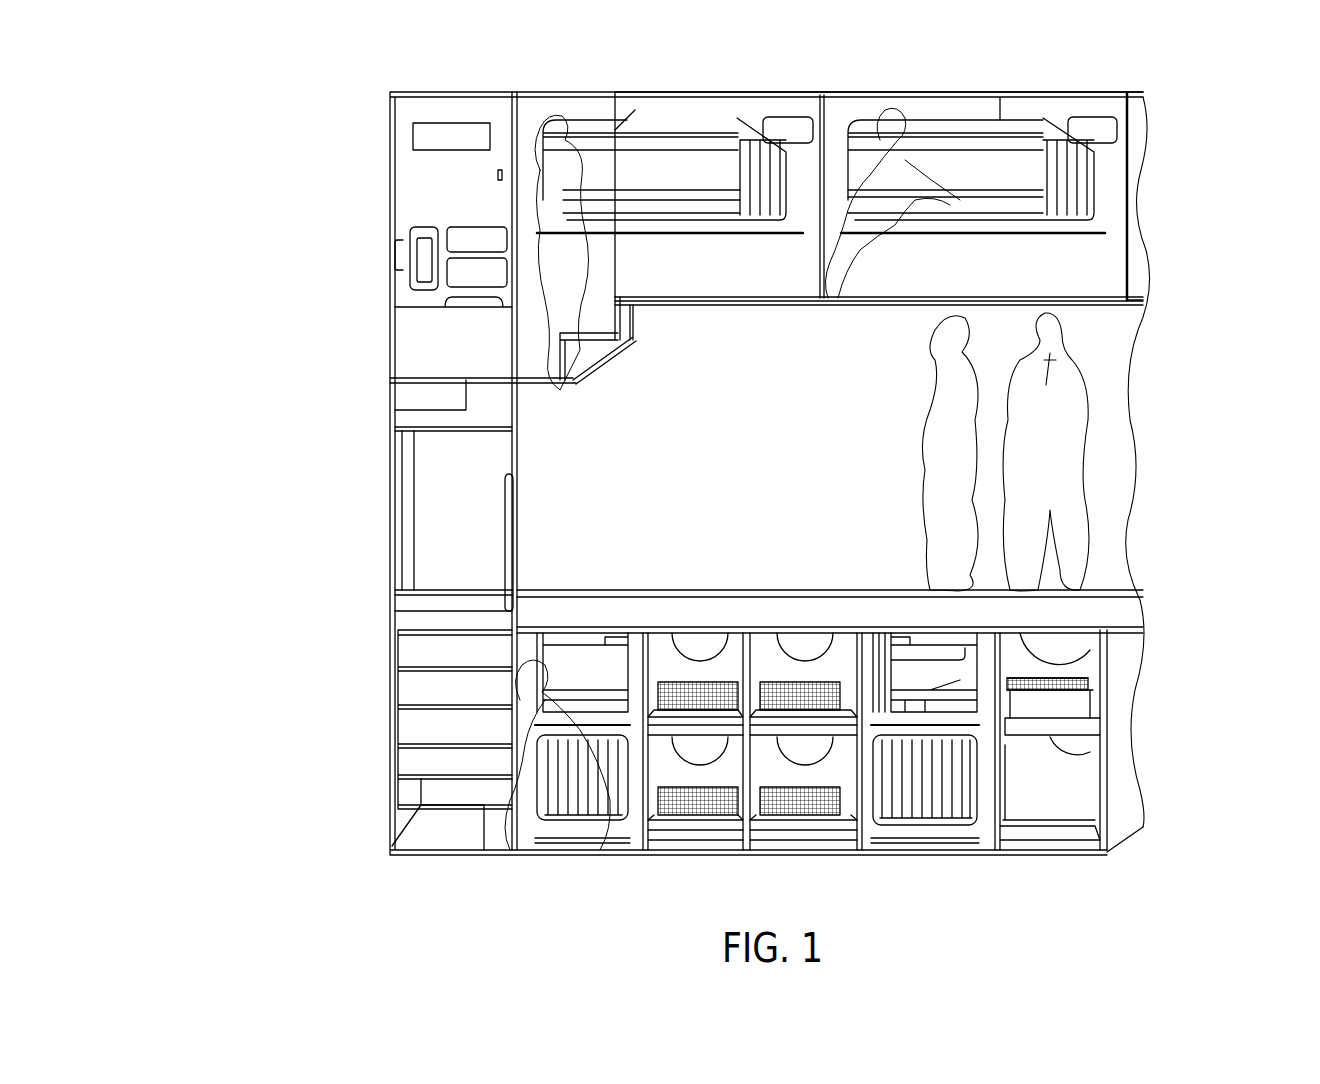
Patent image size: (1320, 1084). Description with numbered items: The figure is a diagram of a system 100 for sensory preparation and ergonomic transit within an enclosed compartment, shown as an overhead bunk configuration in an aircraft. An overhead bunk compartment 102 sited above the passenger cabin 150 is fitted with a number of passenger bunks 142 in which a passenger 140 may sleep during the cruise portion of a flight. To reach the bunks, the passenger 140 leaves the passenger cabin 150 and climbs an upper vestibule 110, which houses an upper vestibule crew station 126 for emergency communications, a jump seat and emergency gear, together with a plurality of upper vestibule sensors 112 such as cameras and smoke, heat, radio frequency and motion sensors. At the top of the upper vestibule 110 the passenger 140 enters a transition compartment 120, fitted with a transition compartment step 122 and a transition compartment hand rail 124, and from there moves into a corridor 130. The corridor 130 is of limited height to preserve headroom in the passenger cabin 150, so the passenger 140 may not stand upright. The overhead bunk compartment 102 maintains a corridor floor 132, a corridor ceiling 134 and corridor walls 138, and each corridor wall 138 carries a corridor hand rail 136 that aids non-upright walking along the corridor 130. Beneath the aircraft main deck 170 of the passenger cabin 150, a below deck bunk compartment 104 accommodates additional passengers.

The overhead bunk configuration 100 is at (145, 150).
The overhead bunk compartment 102 is at (1112, 172).
The below deck bunk compartment 104 is at (1082, 756).
The upper vestibule 110 is at (440, 195).
The upper vestibule sensors 112 is at (412, 137).
The transition compartment 120 is at (585, 316).
The transition compartment step 122 is at (580, 357).
The transition compartment hand rail 124 is at (598, 158).
The upper vestibule crew station 126 is at (420, 272).
The corridor 130 is at (1107, 270).
The corridor floor 132 is at (1150, 300).
The corridor ceiling 134 is at (1093, 93).
The corridor hand rail 136 is at (1107, 240).
The corridor wall 138 is at (1133, 185).
The passenger 140 is at (838, 122).
The passenger bunk 142 is at (968, 160).
The passenger cabin 150 is at (1120, 413).
The aircraft main deck 170 is at (1120, 612).